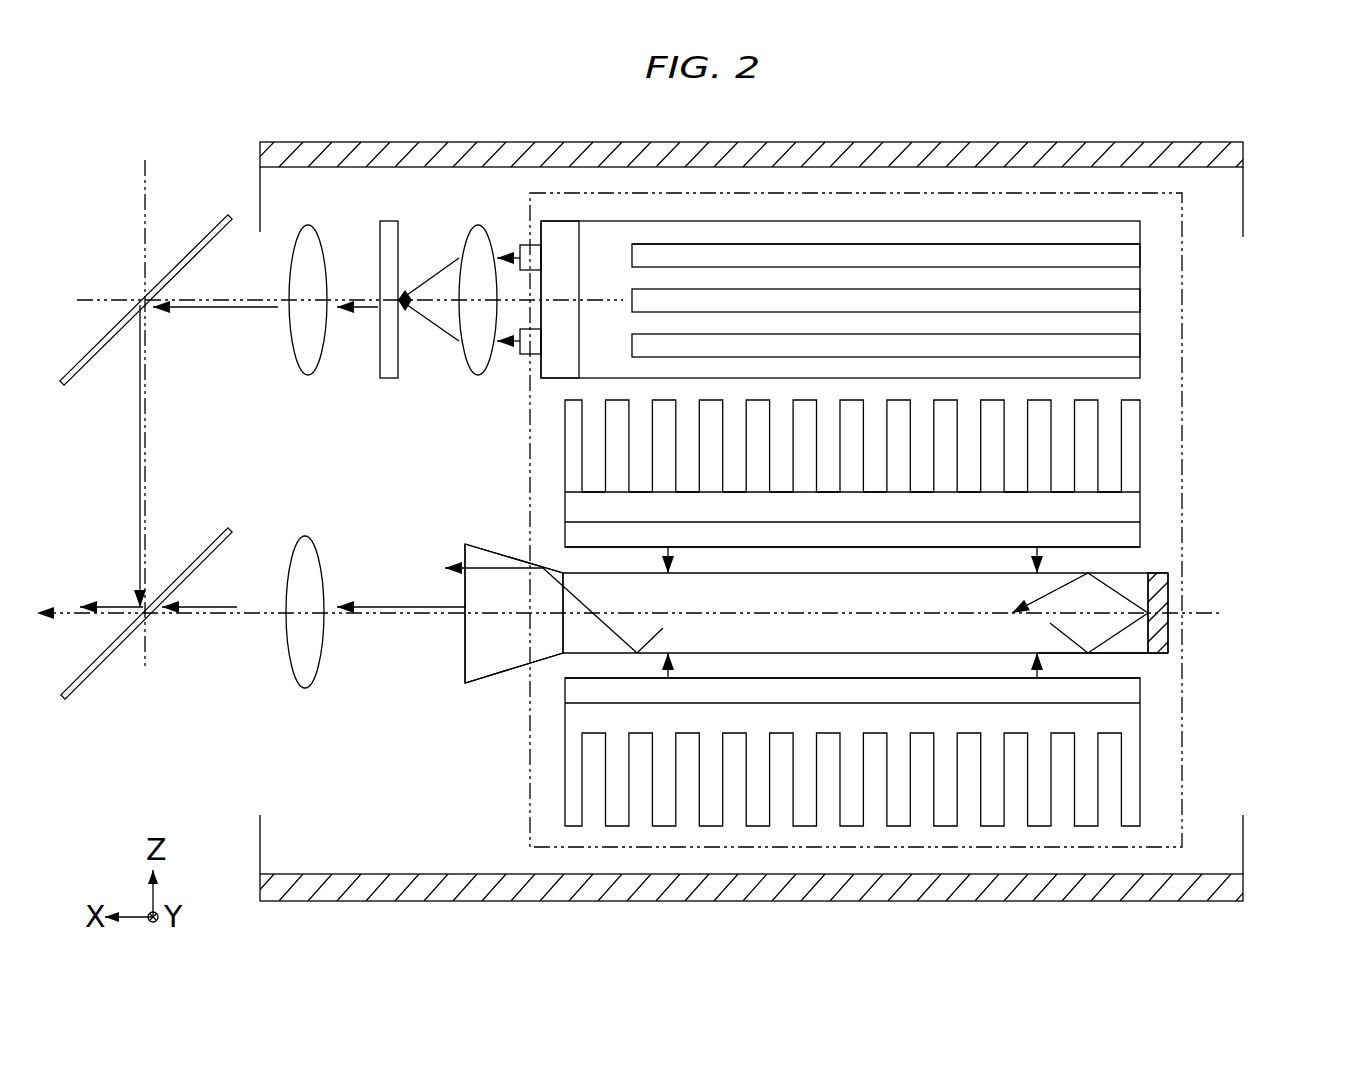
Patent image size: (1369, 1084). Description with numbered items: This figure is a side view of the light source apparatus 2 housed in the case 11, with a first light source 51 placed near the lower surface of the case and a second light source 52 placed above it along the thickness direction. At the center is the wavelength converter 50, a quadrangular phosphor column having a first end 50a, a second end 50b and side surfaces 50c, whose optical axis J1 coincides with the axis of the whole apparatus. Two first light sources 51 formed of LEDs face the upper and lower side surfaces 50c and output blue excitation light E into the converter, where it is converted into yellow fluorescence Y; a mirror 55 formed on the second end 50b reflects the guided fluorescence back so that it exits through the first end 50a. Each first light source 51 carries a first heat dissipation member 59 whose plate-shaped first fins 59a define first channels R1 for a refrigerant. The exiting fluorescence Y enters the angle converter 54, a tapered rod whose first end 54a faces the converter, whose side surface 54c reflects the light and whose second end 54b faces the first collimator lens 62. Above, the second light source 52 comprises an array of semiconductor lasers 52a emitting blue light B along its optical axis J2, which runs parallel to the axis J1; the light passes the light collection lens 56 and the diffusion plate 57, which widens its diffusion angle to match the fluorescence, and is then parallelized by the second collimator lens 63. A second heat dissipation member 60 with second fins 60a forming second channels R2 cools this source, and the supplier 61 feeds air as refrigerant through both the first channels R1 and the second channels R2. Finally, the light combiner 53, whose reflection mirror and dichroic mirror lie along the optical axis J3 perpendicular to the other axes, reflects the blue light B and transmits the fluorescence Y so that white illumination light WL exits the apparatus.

The light source apparatus 2 is at (1300, 156).
The case 11 is at (1160, 150).
The wavelength converter 50 is at (1122, 578).
The first end 50a is at (563, 634).
The second end 50b is at (1150, 633).
The side surfaces 50c is at (1105, 655).
The first light source 51 is at (1132, 538).
The second light source 52 is at (565, 205).
The semiconductor lasers 52a is at (527, 250).
The light combiner 53 is at (195, 250).
The angle converter 54 is at (475, 553).
The first end of angle converter 54a is at (563, 578).
The second end of angle converter 54b is at (462, 664).
The side surface of angle converter 54c is at (487, 682).
The mirror 55 is at (1158, 590).
The light collection lens 56 is at (478, 240).
The diffusion plate 57 is at (390, 230).
The first heat dissipation member 59 is at (1142, 437).
The first fins 59a is at (1090, 455).
The second heat dissipation member 60 is at (940, 205).
The second fins 60a is at (1050, 235).
The supplier 61 is at (1183, 278).
The first collimator lens 62 is at (305, 545).
The second collimator lens 63 is at (316, 238).
The first channels R1 is at (1068, 433).
The second channels R2 is at (812, 255).
The excitation light E is at (1038, 672).
The optical axis of wavelength converter J1 is at (1213, 613).
The optical axis of second light source J2 is at (112, 298).
The optical axis J3 is at (142, 195).
The blue light B is at (360, 306).
The fluorescence Y is at (343, 604).
The illumination light WL is at (105, 518).